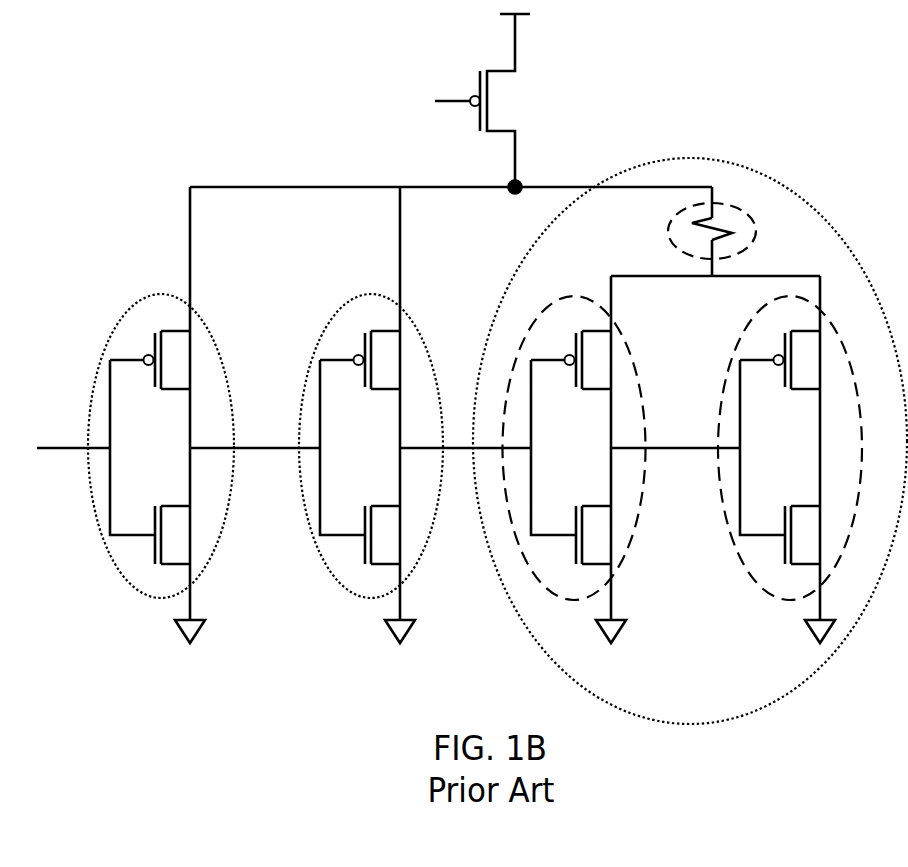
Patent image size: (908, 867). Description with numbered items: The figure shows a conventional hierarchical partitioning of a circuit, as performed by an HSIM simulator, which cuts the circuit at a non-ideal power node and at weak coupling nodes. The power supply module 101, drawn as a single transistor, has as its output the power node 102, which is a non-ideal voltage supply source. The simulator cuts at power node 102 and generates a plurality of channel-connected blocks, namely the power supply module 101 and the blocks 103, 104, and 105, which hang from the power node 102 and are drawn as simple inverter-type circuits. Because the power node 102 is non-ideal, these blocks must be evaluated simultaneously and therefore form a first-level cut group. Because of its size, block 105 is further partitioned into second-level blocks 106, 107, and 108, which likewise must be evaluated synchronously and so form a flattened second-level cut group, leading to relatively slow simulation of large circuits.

The power supply module 101 is at (448, 100).
The power node 102 is at (451, 178).
The channel-connected block 103 is at (149, 415).
The channel-connected block 104 is at (361, 415).
The channel-connected block 105 is at (690, 441).
The channel-connected block 106 is at (731, 231).
The channel-connected block 107 is at (582, 459).
The channel-connected block 108 is at (787, 459).